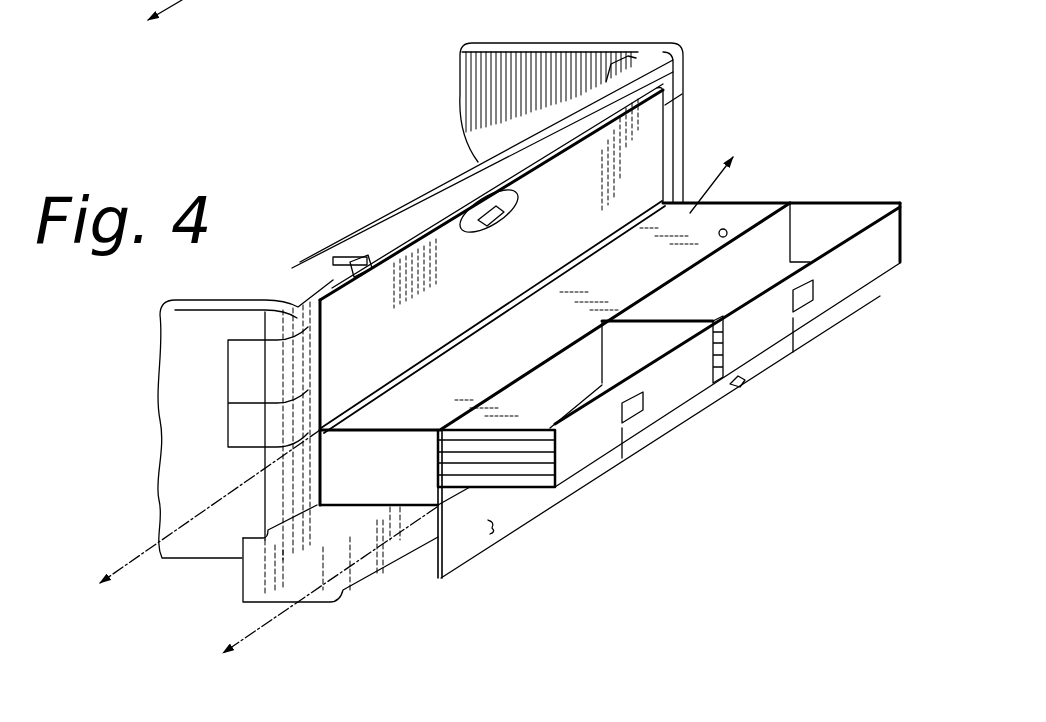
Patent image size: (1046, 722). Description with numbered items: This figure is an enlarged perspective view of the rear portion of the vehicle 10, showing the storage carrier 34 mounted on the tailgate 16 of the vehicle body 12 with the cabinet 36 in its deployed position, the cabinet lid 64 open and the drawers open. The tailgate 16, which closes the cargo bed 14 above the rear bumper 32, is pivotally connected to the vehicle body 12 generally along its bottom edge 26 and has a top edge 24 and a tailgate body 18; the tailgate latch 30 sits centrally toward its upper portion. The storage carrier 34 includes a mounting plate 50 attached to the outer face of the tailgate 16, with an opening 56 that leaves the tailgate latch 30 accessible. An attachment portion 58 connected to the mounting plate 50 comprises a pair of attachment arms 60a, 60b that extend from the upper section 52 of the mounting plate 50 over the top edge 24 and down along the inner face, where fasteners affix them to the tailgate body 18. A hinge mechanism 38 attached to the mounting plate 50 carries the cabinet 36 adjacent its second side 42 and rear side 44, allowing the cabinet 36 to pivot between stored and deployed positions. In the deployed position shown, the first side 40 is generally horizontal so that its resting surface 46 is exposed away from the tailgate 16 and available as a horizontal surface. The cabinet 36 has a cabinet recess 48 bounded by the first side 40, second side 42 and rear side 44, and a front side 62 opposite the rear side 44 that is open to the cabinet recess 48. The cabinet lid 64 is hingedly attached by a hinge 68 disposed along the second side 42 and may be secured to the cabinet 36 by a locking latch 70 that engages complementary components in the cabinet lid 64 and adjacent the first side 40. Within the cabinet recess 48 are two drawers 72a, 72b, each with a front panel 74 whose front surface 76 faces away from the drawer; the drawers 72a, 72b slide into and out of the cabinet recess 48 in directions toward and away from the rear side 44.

The vehicle 10 is at (497, 43).
The vehicle body 12 is at (556, 43).
The cargo bed 14 is at (430, 106).
The tailgate 16 is at (608, 80).
The tailgate body 18 is at (666, 46).
The top edge 24 is at (303, 283).
The bottom edge 26 is at (321, 509).
The tailgate latch 30 is at (474, 204).
The rear bumper 32 is at (262, 580).
The storage carrier 34 is at (727, 200).
The cabinet 36 is at (750, 200).
The hinge mechanism 38 is at (478, 327).
The first side 40 is at (762, 203).
The second side 42 is at (414, 512).
The rear side 44 is at (310, 470).
The resting surface 46 is at (538, 353).
The cabinet recess 48 is at (640, 352).
The mounting plate 50 is at (388, 270).
The upper section 52 is at (437, 250).
The opening 56 is at (522, 198).
The attachment portion 58 is at (682, 70).
The attachment arm 60a is at (352, 266).
The attachment arm 60b is at (683, 94).
The front side 62 is at (842, 307).
The cabinet lid 64 is at (528, 512).
The hinge 68 is at (443, 512).
The locking latch 70 is at (744, 381).
The drawer 72a is at (567, 452).
The drawer 72b is at (877, 233).
The front panel 74 is at (748, 356).
The front surface 76 is at (800, 316).